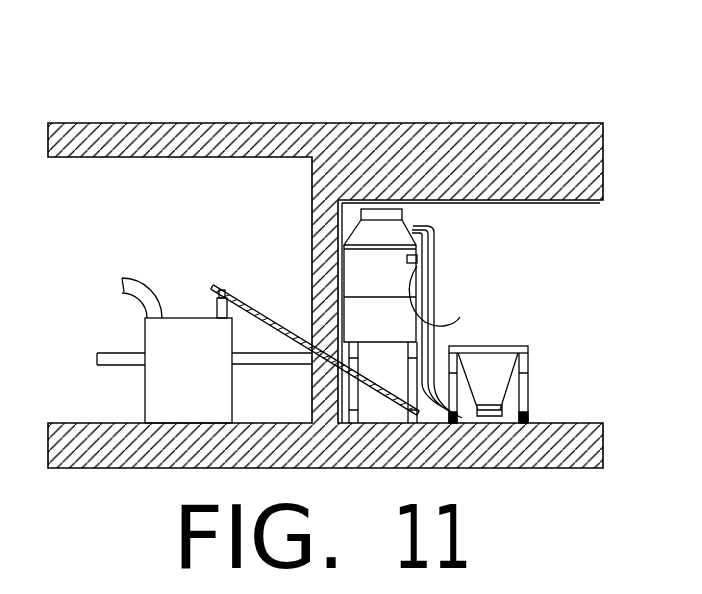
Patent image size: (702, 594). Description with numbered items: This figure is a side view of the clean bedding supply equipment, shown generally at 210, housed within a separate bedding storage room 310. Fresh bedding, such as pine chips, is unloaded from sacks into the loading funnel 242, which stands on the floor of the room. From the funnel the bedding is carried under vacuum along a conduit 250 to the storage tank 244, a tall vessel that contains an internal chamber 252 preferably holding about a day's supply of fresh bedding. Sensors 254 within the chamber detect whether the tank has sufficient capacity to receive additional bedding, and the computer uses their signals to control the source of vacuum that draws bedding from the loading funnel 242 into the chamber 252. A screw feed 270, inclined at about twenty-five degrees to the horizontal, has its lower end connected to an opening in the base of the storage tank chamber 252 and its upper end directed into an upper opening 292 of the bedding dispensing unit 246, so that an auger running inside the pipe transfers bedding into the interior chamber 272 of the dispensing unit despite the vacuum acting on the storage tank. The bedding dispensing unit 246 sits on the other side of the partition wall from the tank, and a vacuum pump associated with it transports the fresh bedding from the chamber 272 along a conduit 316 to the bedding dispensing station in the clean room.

The dispensing assembly 210 is at (284, 100).
The bedding storage room 310 is at (140, 196).
The bedding dispensing unit 246 is at (215, 371).
The interior chamber 272 is at (158, 393).
The conduit 316 is at (140, 297).
The upper opening 292 is at (212, 315).
The screw feed 270 is at (257, 307).
The storage tank 244 is at (400, 288).
The internal chamber 252 is at (393, 330).
The conduit 250 is at (435, 291).
The sensors 254 is at (438, 303).
The loading funnel 242 is at (496, 378).